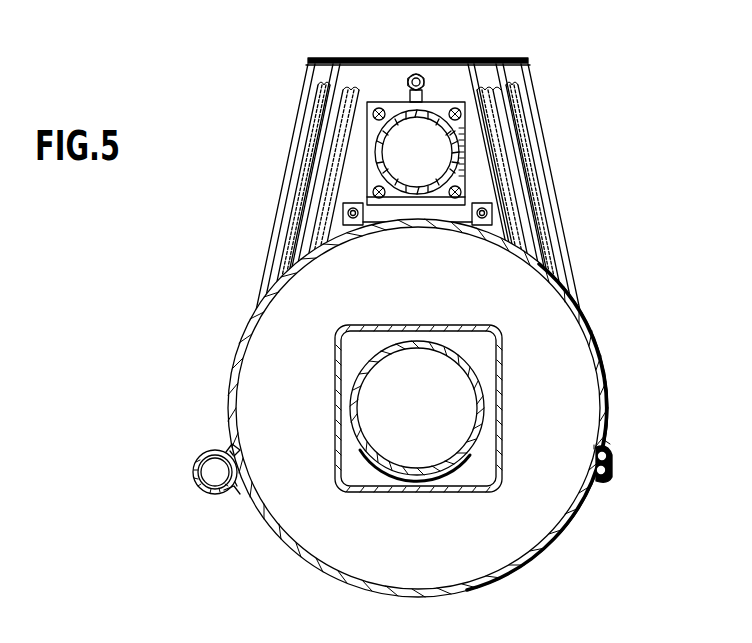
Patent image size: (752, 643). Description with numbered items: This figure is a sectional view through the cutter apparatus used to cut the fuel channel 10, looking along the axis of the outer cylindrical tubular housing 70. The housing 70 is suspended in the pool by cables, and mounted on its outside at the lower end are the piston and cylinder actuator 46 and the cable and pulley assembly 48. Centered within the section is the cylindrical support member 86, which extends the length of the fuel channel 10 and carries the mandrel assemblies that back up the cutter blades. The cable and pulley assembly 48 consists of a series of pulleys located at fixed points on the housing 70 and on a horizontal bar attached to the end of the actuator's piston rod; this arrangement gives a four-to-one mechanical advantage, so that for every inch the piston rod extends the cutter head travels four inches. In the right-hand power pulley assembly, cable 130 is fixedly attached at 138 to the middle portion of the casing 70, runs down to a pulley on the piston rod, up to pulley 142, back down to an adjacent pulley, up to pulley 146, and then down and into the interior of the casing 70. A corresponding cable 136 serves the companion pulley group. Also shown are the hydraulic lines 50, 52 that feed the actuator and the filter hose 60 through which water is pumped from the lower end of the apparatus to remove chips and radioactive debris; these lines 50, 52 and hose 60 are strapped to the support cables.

The fuel channel 10 is at (501, 445).
The piston and cylinder actuator 46 is at (442, 99).
The cable and pulley assembly 48 is at (554, 186).
The hydraulic line 50 is at (607, 458).
The hydraulic line 52 is at (604, 472).
The conduit or hose 60 is at (206, 472).
The outer cylindrical tubular housing 70 is at (602, 399).
The cylindrical support member 86 is at (468, 407).
The cable 130 is at (305, 158).
The cable 136 is at (520, 130).
The attachment point 138 is at (353, 223).
The pulley 142 is at (342, 93).
The pulley 146 is at (337, 94).